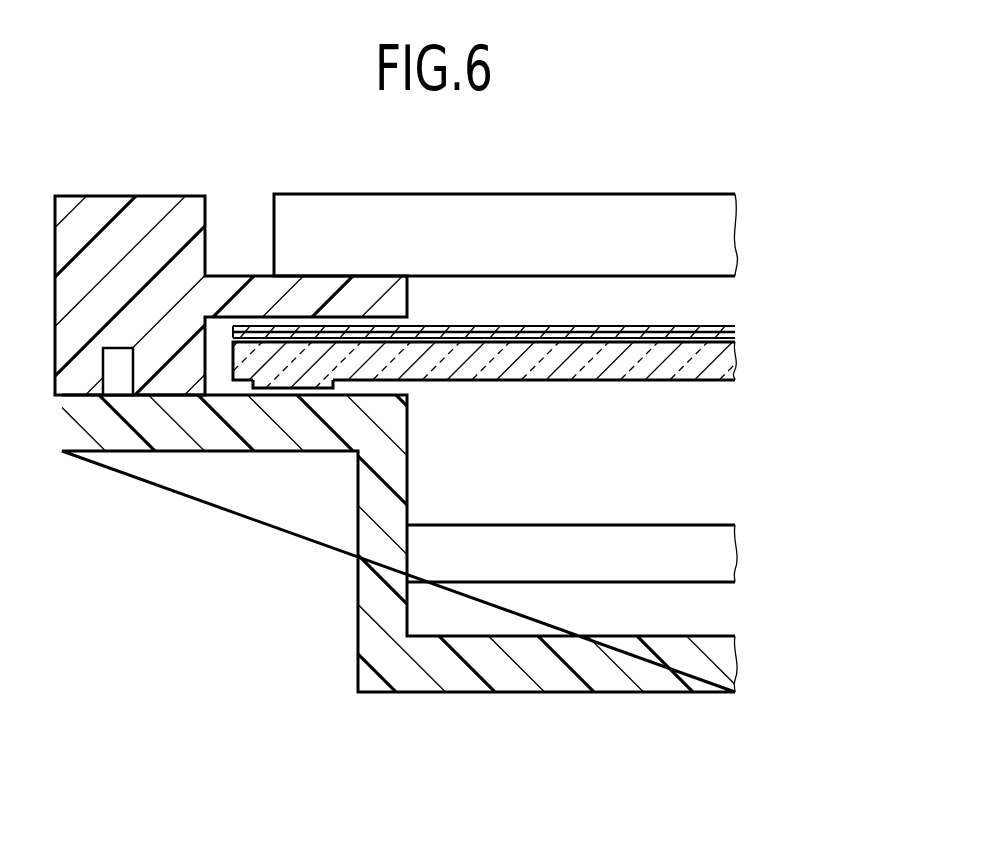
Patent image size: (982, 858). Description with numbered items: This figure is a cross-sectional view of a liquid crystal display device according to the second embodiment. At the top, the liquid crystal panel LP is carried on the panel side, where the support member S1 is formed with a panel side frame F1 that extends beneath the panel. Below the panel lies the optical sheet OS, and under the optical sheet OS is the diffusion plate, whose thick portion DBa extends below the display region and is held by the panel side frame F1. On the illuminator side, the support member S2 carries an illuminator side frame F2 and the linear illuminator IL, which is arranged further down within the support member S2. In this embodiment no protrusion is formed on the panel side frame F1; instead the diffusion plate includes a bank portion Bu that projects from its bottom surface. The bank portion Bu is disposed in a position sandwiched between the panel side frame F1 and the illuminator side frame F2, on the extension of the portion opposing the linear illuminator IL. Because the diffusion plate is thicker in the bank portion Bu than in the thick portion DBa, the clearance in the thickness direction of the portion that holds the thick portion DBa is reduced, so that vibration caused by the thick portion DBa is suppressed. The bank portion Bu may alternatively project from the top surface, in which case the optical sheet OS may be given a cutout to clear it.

The support member S1 is at (127, 197).
The panel side frame F1 is at (240, 290).
The liquid crystal panel LP is at (645, 215).
The optical sheet OS is at (706, 328).
The thick portion DBa is at (703, 370).
The bank portion Bu is at (257, 383).
The linear illuminator IL is at (703, 537).
The illuminator side frame F2 is at (310, 430).
The support member S2 is at (505, 692).